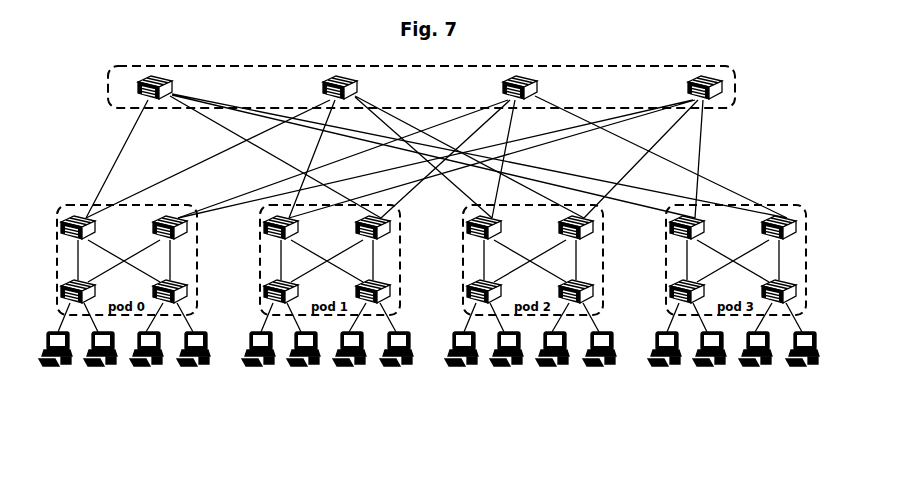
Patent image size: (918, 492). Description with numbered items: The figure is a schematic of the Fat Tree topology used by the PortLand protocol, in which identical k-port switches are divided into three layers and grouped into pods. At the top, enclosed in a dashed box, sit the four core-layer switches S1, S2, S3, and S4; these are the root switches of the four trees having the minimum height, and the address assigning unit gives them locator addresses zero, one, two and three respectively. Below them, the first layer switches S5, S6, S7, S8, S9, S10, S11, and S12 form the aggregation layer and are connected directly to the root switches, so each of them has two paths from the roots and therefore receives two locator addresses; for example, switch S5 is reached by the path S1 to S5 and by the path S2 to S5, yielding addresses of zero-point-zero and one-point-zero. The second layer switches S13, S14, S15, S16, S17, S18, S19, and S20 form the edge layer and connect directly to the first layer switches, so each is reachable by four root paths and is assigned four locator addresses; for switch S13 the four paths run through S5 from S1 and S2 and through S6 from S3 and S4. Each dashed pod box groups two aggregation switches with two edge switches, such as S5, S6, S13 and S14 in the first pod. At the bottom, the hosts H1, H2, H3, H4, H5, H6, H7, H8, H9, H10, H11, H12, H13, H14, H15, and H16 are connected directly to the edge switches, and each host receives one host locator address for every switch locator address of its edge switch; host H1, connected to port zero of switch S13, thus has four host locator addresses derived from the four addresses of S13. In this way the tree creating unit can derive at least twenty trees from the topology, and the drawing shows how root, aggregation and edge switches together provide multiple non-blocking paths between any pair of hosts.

The root switch S1 is at (145, 87).
The root switch S2 is at (326, 87).
The root switch S3 is at (506, 87).
The root switch S4 is at (689, 87).
The first layer switch S5 is at (62, 228).
The first layer switch S6 is at (158, 228).
The first layer switch S7 is at (267, 228).
The first layer switch S8 is at (361, 228).
The first layer switch S9 is at (471, 228).
The first layer switch S10 is at (561, 228).
The first layer switch S11 is at (671, 228).
The first layer switch S12 is at (764, 228).
The second layer switch S13 is at (61, 291).
The second layer switch S14 is at (154, 291).
The second layer switch S15 is at (264, 291).
The second layer switch S16 is at (357, 291).
The second layer switch S17 is at (467, 291).
The second layer switch S18 is at (560, 291).
The second layer switch S19 is at (670, 291).
The second layer switch S20 is at (763, 291).
The host H1 is at (55, 361).
The host H2 is at (100, 361).
The host H3 is at (146, 361).
The host H4 is at (193, 361).
The host H5 is at (258, 361).
The host H6 is at (303, 361).
The host H7 is at (349, 361).
The host H8 is at (396, 361).
The host H9 is at (461, 361).
The host H10 is at (506, 361).
The host H11 is at (552, 361).
The host H12 is at (599, 361).
The host H13 is at (664, 361).
The host H14 is at (709, 361).
The host H15 is at (755, 361).
The host H16 is at (802, 361).